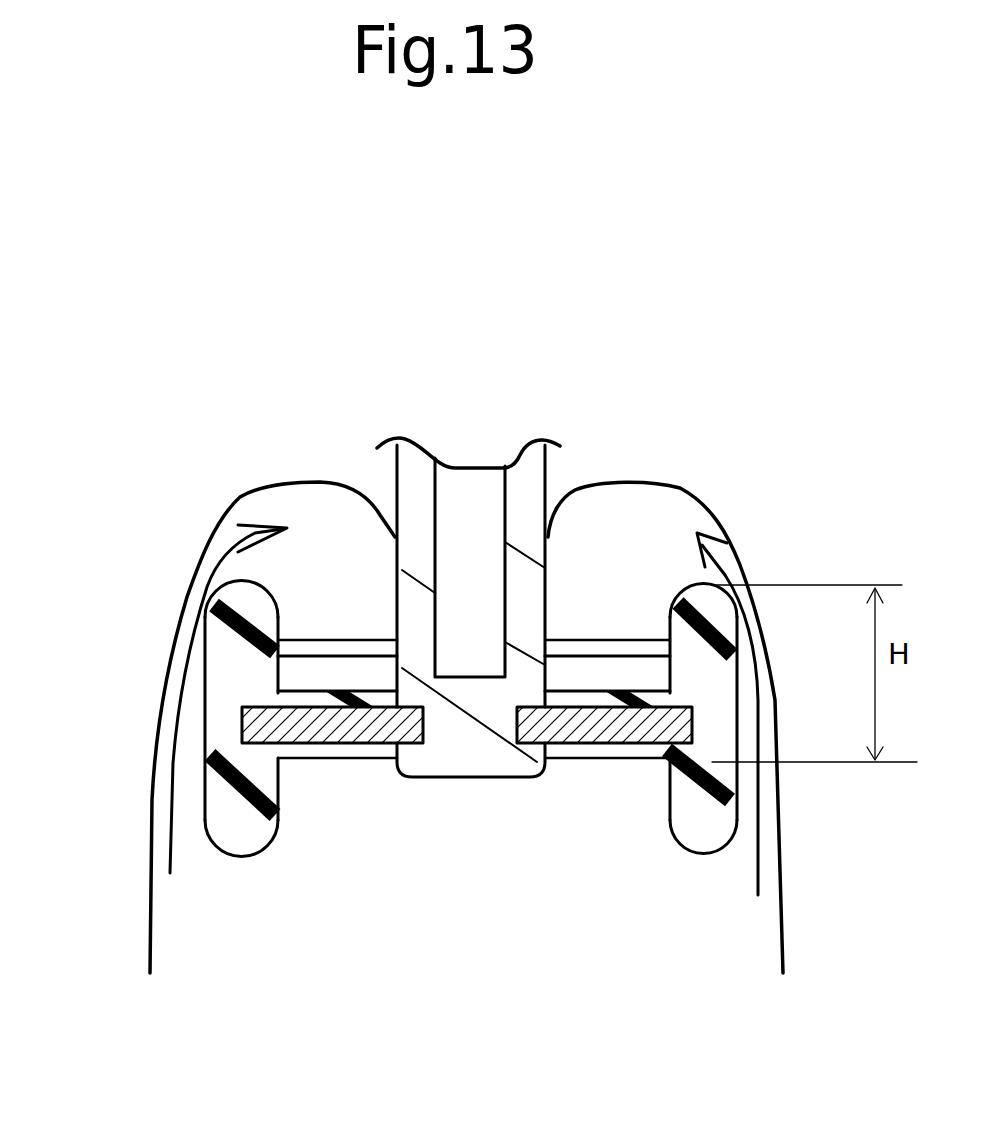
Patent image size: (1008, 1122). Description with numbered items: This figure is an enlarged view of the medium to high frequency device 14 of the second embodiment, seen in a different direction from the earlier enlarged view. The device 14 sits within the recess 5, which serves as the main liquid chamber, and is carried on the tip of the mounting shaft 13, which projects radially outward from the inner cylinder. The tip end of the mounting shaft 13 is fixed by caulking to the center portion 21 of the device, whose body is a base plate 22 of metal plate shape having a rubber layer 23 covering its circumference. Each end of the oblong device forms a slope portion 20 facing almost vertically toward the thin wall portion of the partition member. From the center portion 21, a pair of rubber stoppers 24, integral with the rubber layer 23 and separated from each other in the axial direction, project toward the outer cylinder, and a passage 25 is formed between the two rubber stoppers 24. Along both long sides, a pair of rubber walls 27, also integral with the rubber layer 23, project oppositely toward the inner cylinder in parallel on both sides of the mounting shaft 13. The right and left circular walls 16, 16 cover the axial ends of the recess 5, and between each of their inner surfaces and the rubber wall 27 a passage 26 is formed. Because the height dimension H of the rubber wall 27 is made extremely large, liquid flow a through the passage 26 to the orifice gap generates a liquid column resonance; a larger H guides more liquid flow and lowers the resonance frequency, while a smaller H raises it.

The recess 5 is at (515, 973).
The mounting shaft 13 is at (477, 497).
The medium to high frequency device 14 is at (547, 797).
The circular wall 16 is at (122, 863).
The slope portion 20 is at (343, 640).
The center portion 21 is at (565, 690).
The base plate 22 is at (330, 727).
The rubber layer 23 is at (378, 762).
The rubber stopper 24 is at (720, 870).
The passage 25 is at (427, 795).
The passage 26 is at (200, 618).
The rubber wall 27 is at (220, 682).